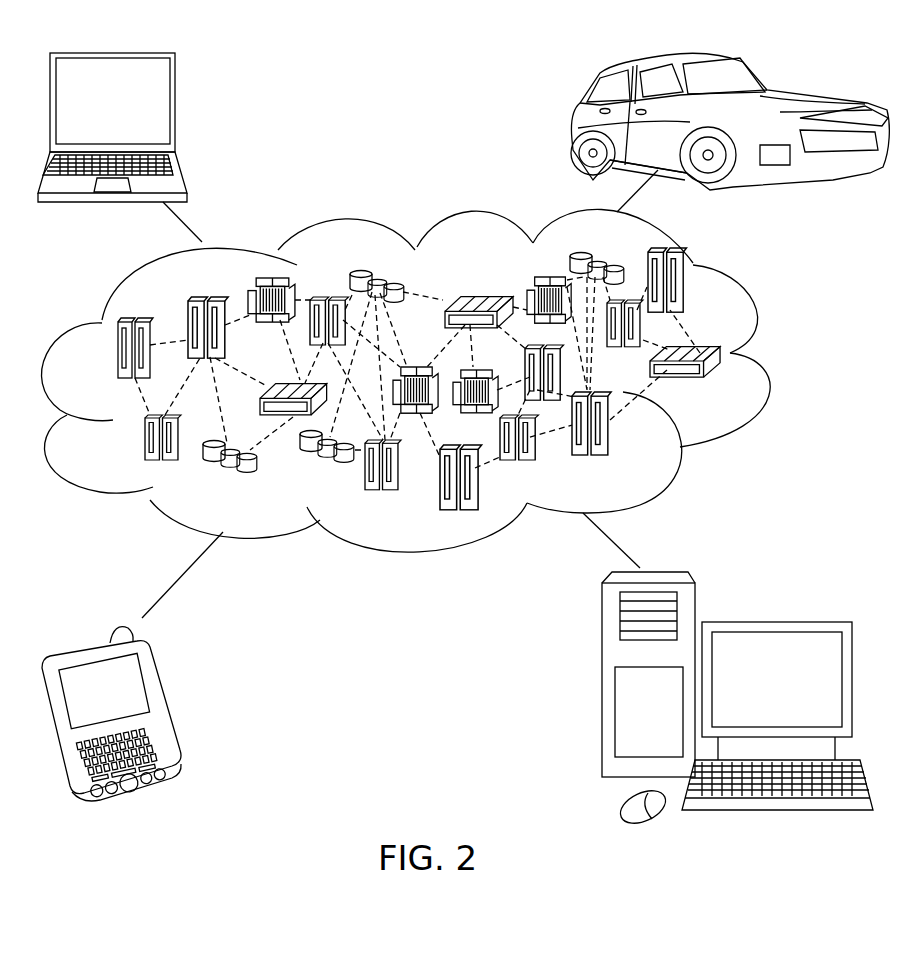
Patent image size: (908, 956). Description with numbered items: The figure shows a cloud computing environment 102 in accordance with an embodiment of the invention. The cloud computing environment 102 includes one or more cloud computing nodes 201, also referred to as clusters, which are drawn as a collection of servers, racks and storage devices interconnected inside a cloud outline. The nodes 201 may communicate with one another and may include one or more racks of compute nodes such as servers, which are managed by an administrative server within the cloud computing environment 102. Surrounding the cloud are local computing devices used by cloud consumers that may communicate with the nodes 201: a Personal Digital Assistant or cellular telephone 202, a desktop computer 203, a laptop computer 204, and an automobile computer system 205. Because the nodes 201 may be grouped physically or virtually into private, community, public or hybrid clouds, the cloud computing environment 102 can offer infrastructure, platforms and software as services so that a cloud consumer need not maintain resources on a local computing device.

The cloud computing environment 102 is at (773, 353).
The cloud computing nodes 201 is at (723, 385).
The Personal Digital Assistant (PDA) or cellular telephone 202 is at (170, 707).
The desktop computer 203 is at (773, 622).
The laptop computer 204 is at (175, 107).
The automobile computer system 205 is at (577, 122).